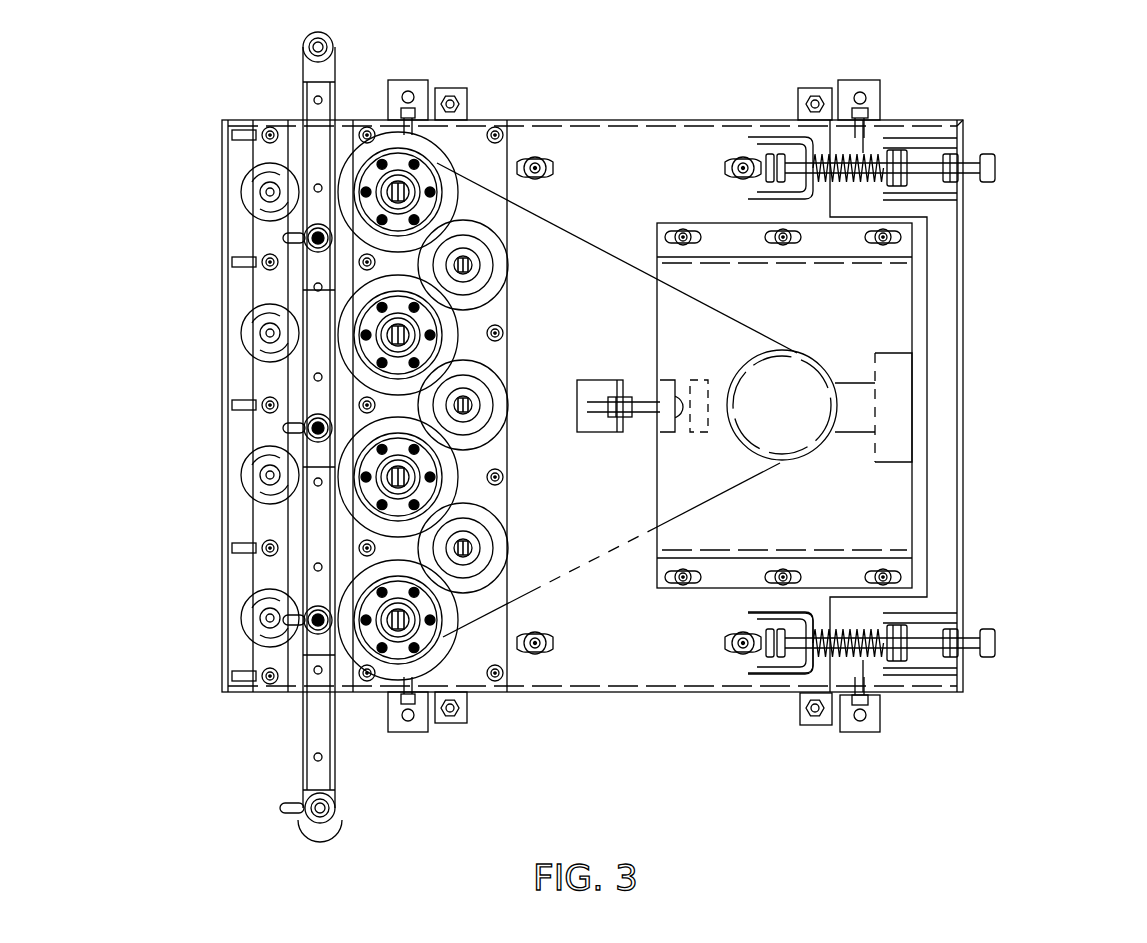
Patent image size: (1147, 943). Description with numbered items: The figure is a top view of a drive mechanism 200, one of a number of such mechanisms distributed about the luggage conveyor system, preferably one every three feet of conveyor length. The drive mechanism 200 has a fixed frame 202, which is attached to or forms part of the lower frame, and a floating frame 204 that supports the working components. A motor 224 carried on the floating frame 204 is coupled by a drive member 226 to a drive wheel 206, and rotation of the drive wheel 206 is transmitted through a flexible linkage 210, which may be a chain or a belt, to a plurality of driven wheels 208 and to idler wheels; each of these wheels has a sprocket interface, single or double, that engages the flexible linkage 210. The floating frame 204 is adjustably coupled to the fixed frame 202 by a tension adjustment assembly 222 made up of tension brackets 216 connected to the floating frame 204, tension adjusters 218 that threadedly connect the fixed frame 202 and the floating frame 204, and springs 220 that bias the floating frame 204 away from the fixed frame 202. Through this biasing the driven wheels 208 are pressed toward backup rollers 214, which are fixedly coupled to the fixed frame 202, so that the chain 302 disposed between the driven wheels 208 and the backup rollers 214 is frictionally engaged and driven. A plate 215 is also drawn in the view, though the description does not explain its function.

The drive mechanism 200 is at (599, 433).
The fixed frame 202 is at (965, 300).
The floating frame 204 is at (582, 120).
The drive wheel 206 is at (896, 436).
The driven wheels 208 is at (255, 268).
The flexible linkage 210 is at (558, 228).
The backup rollers 214 is at (243, 207).
The mounting plate 215 is at (690, 372).
The tension brackets 216 is at (752, 675).
The tension adjusters 218 is at (798, 648).
The springs 220 is at (865, 120).
The tension adjustment assembly 222 is at (833, 80).
The motor 224 is at (913, 403).
The drive member 226 is at (852, 432).
The chain 302 is at (303, 708).